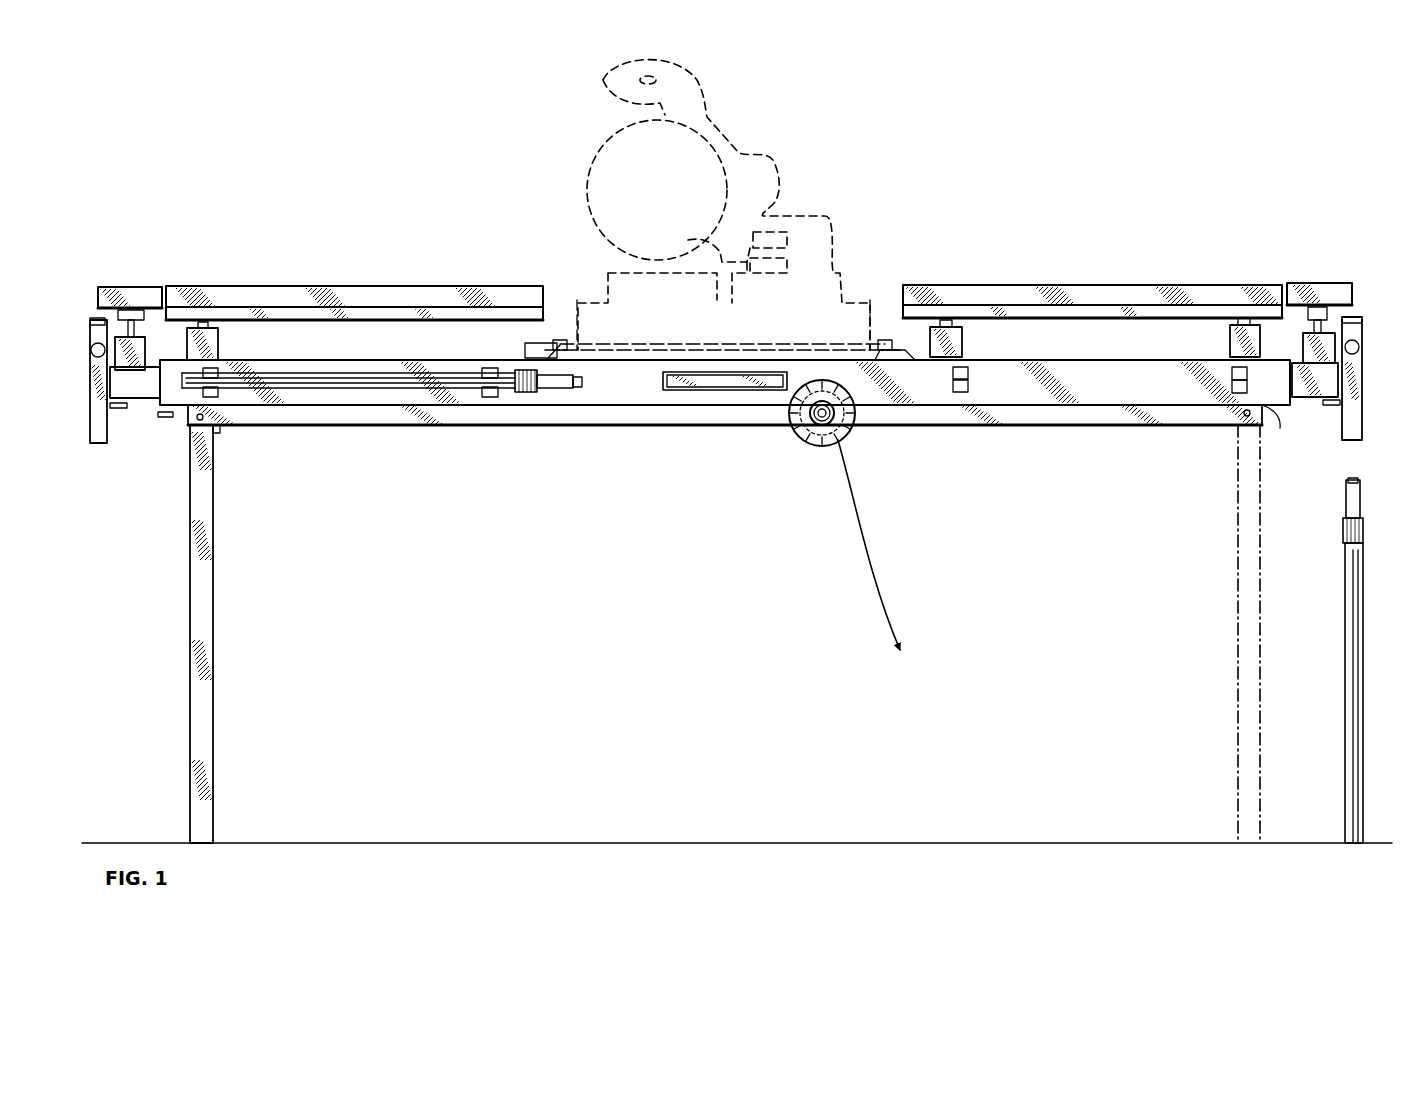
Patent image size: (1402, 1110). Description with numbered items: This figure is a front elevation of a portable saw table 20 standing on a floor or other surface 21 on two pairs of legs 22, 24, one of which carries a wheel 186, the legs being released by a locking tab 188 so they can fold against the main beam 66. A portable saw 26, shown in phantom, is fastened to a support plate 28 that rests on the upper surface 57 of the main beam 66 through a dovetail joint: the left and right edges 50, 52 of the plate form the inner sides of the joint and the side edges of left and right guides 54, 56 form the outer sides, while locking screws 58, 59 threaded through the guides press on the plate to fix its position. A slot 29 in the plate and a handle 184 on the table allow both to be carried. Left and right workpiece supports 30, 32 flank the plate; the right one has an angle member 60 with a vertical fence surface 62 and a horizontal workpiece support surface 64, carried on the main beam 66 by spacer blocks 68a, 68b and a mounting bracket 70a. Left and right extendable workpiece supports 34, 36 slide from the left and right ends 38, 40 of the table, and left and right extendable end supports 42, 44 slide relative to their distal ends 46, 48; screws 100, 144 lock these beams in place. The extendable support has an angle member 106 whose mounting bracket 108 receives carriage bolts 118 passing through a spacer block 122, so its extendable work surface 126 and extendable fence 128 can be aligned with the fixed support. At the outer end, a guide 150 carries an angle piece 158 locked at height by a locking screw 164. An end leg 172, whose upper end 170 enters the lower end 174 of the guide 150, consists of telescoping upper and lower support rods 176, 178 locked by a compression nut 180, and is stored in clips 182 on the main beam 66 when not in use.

The saw table 20 is at (205, 170).
The surface 21 is at (606, 843).
The legs 22 is at (190, 612).
The legs 24 is at (940, 426).
The portable saw 26 is at (742, 153).
The support plate 28 is at (675, 350).
The slot 29 is at (772, 356).
The left workpiece support 30 is at (234, 268).
The right workpiece support 32 is at (1004, 264).
The left extendable workpiece support 34 is at (134, 465).
The right extendable workpiece support 36 is at (1292, 468).
The left end 38 is at (160, 400).
The right end 40 is at (1242, 426).
The left extendable end support 42 is at (97, 443).
The right extendable end support 44 is at (1346, 435).
The distal end 46 is at (118, 410).
The distal end 48 is at (1335, 386).
The left edge 50 is at (562, 340).
The right edge 52 is at (907, 345).
The left guide 54 is at (527, 350).
The right guide 56 is at (925, 340).
The upper surface 57 is at (388, 360).
The locking screw 58 is at (577, 322).
The locking screw 59 is at (880, 347).
The angle member 60 is at (284, 286).
The vertical surface 62 is at (1150, 297).
The workpiece support surface 64 is at (1107, 310).
The main beam 66 is at (632, 395).
The spacer block 68a is at (964, 346).
The spacer block 68b is at (1232, 348).
The mounting bracket 70a is at (1065, 320).
The adjusting screw 100 is at (1283, 392).
The angle member 106 is at (1316, 283).
The mounting bracket 108 is at (150, 312).
The carriage bolts 118 is at (135, 330).
The spacer block 122 is at (135, 382).
The extendable work surface 126 is at (1333, 298).
The extendable fence 128 is at (1296, 290).
The locking screw 144 is at (1332, 406).
The guide 150 is at (1356, 428).
The angle piece 158 is at (1355, 318).
The locking screw 164 is at (1359, 348).
The upper end 170 is at (1360, 478).
The end legs 172 is at (301, 372).
The lower end 174 is at (1347, 458).
The upper support rod 176 is at (1347, 496).
The lower support rod 178 is at (1344, 596).
The compression nut 180 is at (1345, 532).
The storage clips 182 is at (215, 397).
The handle 184 is at (700, 386).
The wheel 186 is at (806, 440).
The locking tab 188 is at (218, 433).